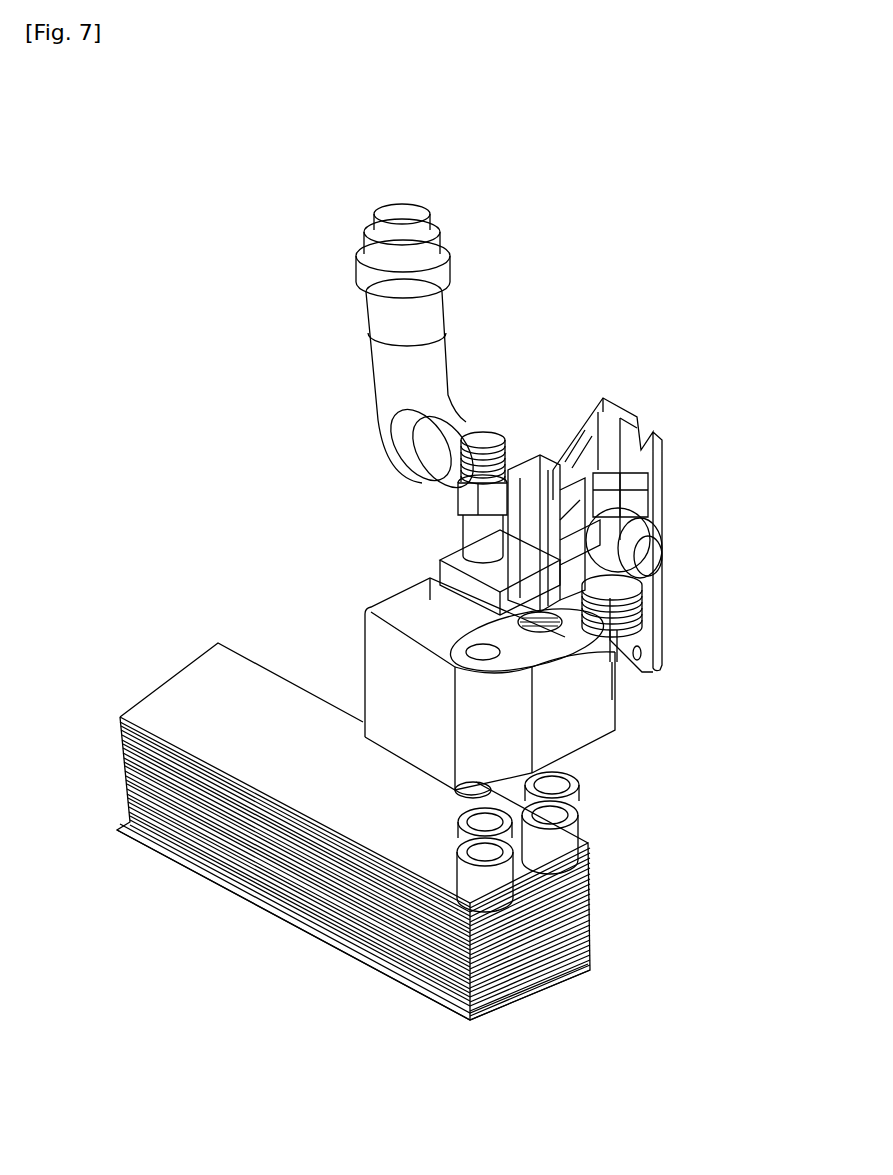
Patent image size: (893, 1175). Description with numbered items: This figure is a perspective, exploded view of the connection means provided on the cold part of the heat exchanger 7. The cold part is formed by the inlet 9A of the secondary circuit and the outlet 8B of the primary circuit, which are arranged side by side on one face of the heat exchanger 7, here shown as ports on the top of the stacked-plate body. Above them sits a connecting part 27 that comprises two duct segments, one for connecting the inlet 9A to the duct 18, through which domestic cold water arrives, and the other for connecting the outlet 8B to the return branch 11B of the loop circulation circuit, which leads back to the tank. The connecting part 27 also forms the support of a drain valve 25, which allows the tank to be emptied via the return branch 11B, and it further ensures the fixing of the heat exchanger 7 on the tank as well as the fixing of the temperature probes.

The heat exchanger 7 is at (210, 873).
The fluid inlet of the secondary circuit 9A is at (385, 970).
The fluid outlet of the primary circuit 8B is at (562, 832).
The return branch 11B is at (370, 390).
The duct 18 is at (458, 522).
The drain valve 25 is at (662, 505).
The connecting part 27 is at (603, 402).